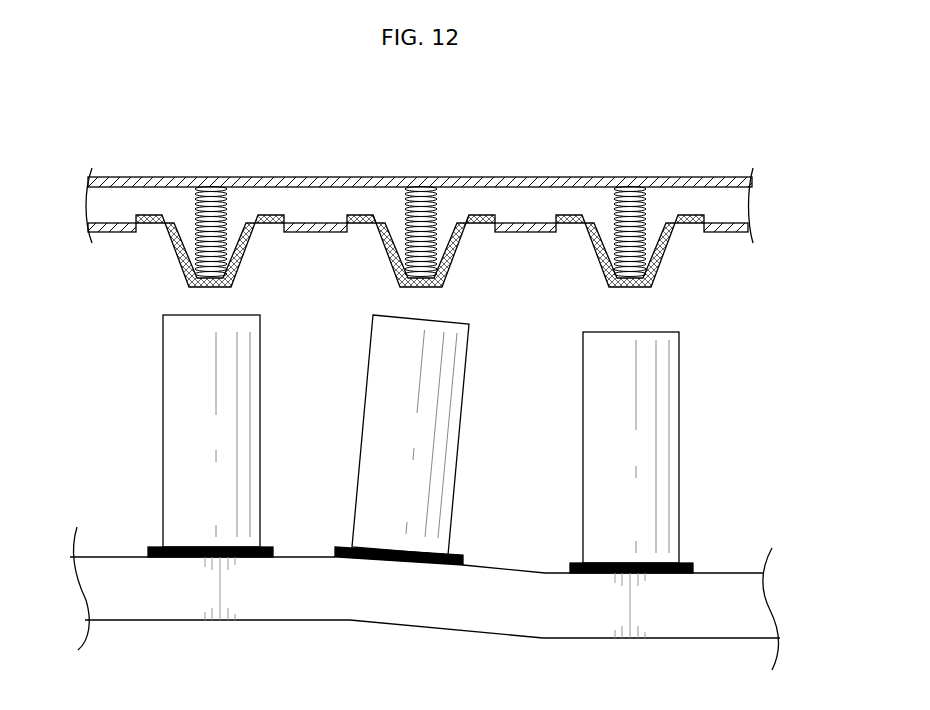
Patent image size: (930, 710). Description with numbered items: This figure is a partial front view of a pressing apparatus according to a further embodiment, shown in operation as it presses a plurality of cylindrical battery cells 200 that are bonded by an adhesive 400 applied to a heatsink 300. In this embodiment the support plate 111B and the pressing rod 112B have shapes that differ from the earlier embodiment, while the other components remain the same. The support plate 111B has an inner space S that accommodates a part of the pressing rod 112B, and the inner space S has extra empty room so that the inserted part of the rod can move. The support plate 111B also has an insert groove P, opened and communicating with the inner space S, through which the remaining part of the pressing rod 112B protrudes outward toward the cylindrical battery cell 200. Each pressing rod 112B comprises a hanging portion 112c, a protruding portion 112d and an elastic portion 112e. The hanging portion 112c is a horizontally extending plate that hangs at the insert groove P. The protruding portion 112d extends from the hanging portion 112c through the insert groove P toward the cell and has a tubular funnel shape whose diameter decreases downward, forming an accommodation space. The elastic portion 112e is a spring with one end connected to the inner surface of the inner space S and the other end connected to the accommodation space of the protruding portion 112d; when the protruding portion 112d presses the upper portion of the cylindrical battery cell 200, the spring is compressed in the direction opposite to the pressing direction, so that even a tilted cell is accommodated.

The support plate 111B is at (157, 170).
The inner space S is at (287, 202).
The insert groove P is at (162, 229).
The pressing rod 112B is at (602, 204).
The elastic portion 112e is at (412, 208).
The hanging portion 112c is at (480, 217).
The protruding portion 112d is at (453, 265).
The cylindrical battery cell 200 is at (140, 443).
The adhesive 400 is at (157, 547).
The heatsink 300 is at (140, 610).